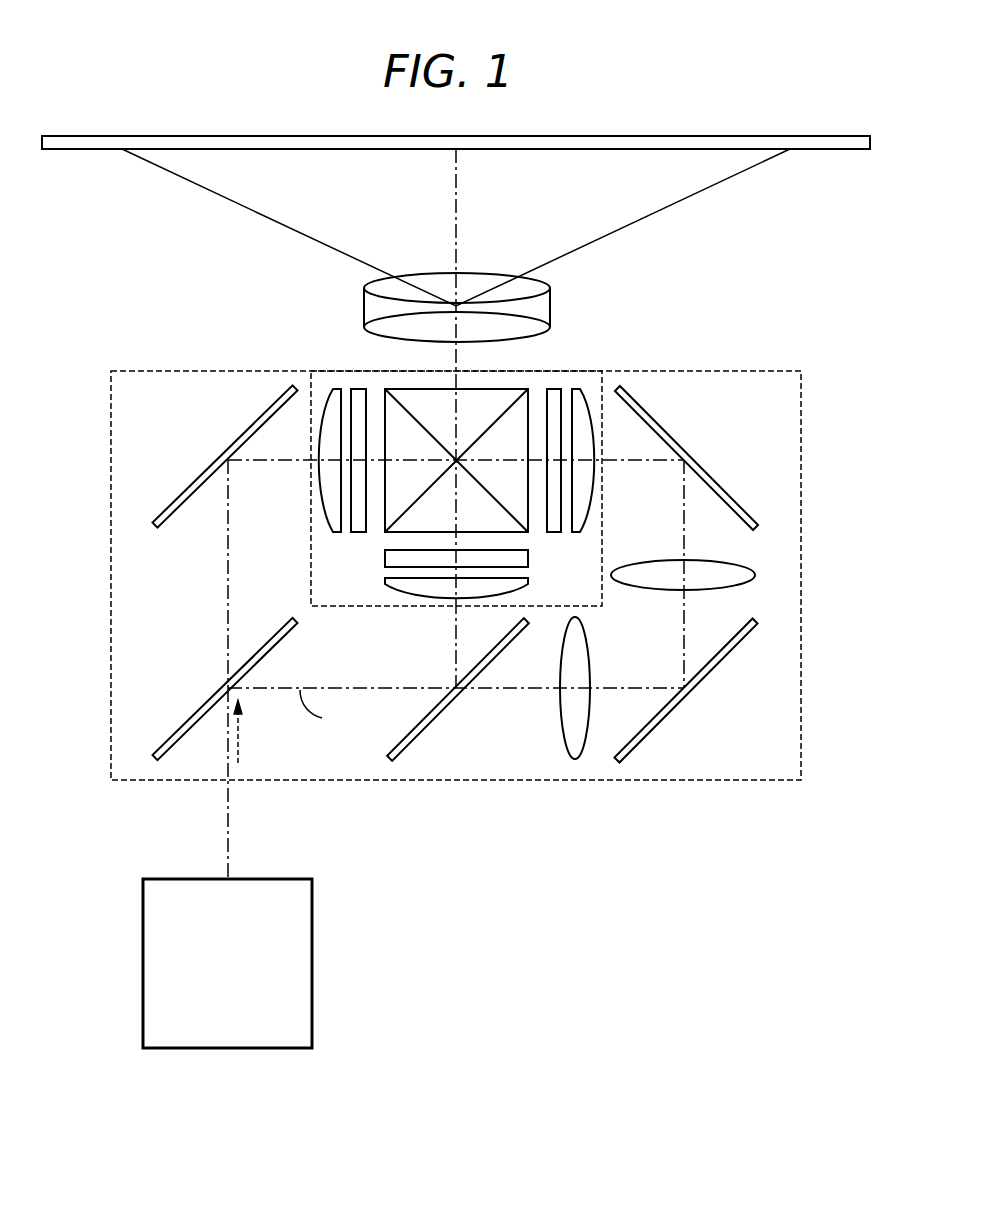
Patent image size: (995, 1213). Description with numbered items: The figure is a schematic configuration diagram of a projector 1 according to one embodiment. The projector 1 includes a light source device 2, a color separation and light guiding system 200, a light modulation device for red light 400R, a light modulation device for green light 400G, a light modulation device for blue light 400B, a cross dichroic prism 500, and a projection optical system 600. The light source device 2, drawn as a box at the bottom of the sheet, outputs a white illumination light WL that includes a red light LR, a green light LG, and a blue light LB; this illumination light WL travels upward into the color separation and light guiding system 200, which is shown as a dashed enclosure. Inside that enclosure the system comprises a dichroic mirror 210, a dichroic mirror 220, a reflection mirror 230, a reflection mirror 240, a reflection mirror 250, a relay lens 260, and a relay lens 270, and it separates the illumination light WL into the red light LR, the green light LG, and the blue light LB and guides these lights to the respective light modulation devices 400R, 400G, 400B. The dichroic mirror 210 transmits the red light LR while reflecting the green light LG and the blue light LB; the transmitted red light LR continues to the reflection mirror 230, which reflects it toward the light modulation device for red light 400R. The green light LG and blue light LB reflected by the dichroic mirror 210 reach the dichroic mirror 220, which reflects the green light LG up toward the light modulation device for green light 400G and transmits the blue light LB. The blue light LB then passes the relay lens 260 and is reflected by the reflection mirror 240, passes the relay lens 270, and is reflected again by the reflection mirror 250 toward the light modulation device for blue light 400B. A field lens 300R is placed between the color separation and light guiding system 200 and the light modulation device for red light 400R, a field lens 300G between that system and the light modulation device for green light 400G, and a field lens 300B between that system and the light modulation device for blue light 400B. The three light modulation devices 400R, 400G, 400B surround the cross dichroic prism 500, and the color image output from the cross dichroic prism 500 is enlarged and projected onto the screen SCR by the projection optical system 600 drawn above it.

The projector 1 is at (814, 343).
The light source device 2 is at (313, 900).
The color separation and light guiding system 200 is at (110, 517).
The dichroic mirror 210 is at (190, 722).
The dichroic mirror 220 is at (433, 720).
The reflection mirror 230 is at (202, 475).
The reflection mirror 240 is at (710, 672).
The reflection mirror 250 is at (713, 478).
The relay lens 260 is at (558, 712).
The relay lens 270 is at (745, 572).
The field lens 300R is at (335, 389).
The field lens 300G is at (385, 580).
The field lens 300B is at (580, 389).
The light modulation device for red light 400R is at (358, 389).
The light modulation device for green light 400G is at (387, 558).
The light modulation device for blue light 400B is at (555, 389).
The cross dichroic prism 500 is at (472, 398).
The projection optical system 600 is at (437, 283).
The screen SCR is at (836, 149).
The illumination light WL is at (240, 742).
The red light LR is at (228, 598).
The green light LG is at (456, 642).
The blue light LB is at (684, 634).